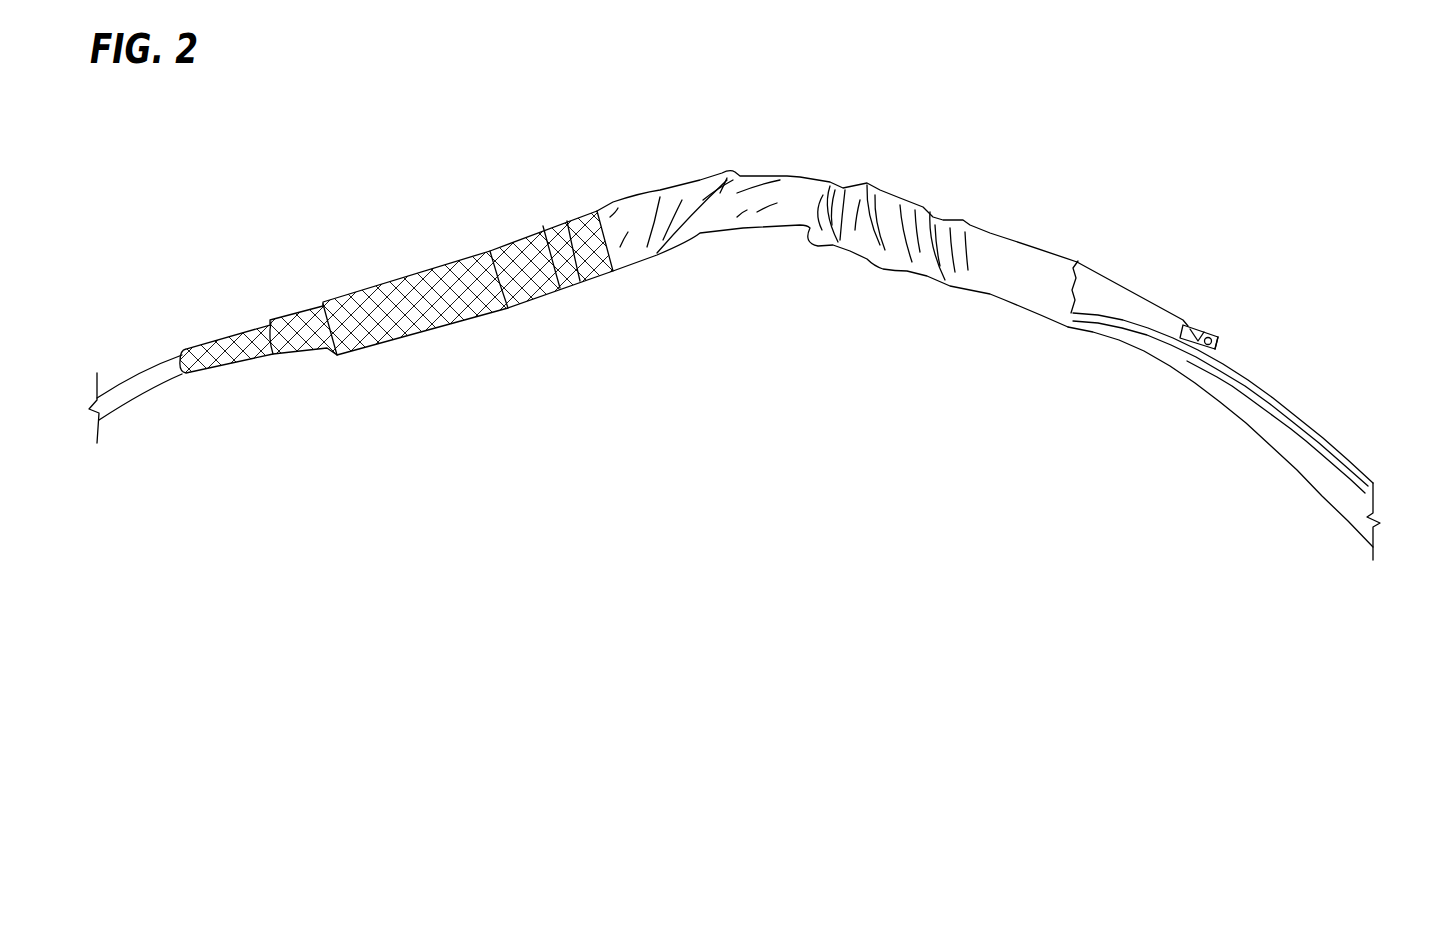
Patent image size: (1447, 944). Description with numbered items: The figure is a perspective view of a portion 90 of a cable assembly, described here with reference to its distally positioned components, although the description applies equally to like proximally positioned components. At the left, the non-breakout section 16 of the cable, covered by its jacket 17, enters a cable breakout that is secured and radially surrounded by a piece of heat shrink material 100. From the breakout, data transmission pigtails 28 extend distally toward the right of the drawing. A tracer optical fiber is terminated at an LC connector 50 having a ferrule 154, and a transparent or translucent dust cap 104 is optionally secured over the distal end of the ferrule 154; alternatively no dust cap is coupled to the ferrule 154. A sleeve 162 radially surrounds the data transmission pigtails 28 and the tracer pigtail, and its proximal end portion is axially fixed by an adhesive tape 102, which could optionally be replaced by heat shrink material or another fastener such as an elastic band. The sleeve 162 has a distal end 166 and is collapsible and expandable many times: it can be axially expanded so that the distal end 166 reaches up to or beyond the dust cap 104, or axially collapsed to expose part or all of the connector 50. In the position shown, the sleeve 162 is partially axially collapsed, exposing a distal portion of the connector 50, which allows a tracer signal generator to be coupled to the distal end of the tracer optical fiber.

The non-breakout section 16 is at (153, 363).
The jacket 17 is at (131, 385).
The heat shrink material 100 is at (285, 325).
The adhesive tape 102 is at (553, 245).
The sleeve 162 is at (793, 193).
The distal end 166 is at (1083, 258).
The LC connector 50 is at (1148, 308).
The ferrule 154 is at (1200, 337).
The dust cap 104 is at (1220, 347).
The data transmission pigtails 28 is at (1340, 460).
The portion 90 is at (1262, 171).